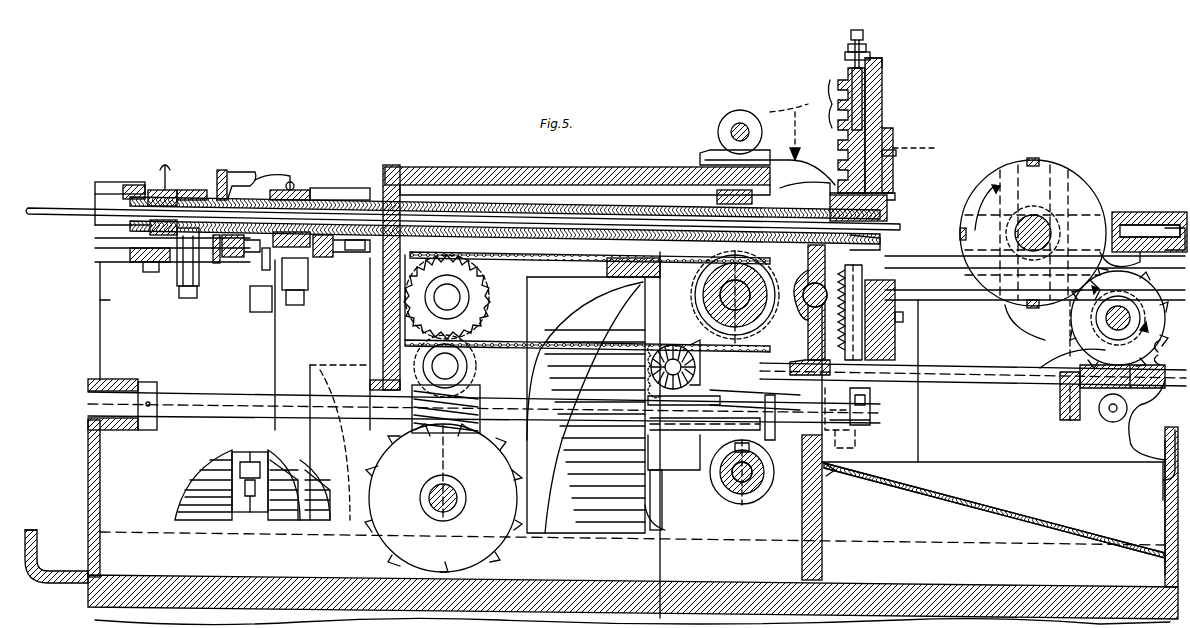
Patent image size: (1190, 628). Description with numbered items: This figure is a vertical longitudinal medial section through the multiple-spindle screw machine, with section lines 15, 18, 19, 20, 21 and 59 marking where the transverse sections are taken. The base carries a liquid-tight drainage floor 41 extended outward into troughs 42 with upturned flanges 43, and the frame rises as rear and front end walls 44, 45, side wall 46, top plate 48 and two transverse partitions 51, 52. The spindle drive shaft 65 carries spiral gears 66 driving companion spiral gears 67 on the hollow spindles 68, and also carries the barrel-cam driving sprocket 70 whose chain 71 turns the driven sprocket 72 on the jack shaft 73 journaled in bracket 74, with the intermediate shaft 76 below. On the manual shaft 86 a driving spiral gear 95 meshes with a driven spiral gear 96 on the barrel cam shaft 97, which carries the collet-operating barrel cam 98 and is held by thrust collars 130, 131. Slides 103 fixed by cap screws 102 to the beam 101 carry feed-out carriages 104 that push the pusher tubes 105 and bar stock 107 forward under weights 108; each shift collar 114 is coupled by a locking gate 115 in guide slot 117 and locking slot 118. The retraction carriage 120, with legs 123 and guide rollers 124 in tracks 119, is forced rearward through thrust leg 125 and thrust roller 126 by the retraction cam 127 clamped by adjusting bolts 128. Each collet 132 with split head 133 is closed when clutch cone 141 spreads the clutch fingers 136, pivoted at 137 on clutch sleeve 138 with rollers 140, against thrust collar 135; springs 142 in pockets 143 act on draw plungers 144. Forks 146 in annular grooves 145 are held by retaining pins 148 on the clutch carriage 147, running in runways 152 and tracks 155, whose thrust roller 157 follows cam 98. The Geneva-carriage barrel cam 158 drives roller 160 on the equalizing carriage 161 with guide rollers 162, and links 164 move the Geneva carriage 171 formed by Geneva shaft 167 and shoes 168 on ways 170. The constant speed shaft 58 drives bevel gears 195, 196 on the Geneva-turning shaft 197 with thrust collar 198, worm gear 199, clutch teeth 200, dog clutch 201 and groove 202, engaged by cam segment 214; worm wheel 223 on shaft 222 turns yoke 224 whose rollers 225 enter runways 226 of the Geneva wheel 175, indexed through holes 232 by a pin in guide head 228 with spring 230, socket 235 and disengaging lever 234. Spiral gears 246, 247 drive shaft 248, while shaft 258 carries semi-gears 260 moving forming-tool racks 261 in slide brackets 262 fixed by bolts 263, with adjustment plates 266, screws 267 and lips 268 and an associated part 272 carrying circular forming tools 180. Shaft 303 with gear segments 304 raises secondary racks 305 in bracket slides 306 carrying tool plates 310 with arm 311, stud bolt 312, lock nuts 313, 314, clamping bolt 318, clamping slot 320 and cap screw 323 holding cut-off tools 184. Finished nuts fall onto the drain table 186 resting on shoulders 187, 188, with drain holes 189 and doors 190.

The section line 15— 15 is at (922, 470).
The section line 18— 18 is at (325, 345).
The section line 19— 19 is at (152, 320).
The section line 20— 20 is at (740, 230).
The section line 21— 21 is at (451, 615).
The drainage floor 41 is at (948, 587).
The extension troughs 42 is at (60, 572).
The upturned flanges 43 is at (40, 532).
The rear end wall 44 is at (88, 477).
The front end wall 45 is at (1165, 578).
The side wall 46 is at (632, 349).
The top plate 48 is at (548, 167).
The vertical transverse partition 51 is at (383, 290).
The vertical transverse partition 52 is at (822, 524).
The constant speed shaft 58 is at (650, 368).
The center line 59 is at (660, 568).
The spindle drive shaft 65 is at (805, 305).
The spiral gears 66 is at (692, 292).
The companion spiral gears 67 is at (715, 198).
The spindles 68 is at (565, 205).
The barrel-cam driving sprocket 70 is at (700, 285).
The drum-driving chain 71 is at (475, 312).
The driven sprocket 72 is at (478, 268).
The jack shaft 73 is at (470, 290).
The bracket 74 is at (465, 300).
The intermediate shaft 76 is at (472, 367).
The manually operable shaft 86 is at (430, 505).
The driving spiral gear 95 is at (375, 545).
The driven spiral gear 96 is at (448, 430).
The barrel cam shaft 97 is at (185, 392).
The collet-operating barrel cam 98 is at (275, 360).
The slide-supporting beam 101 is at (130, 255).
The cap screws 102 is at (145, 262).
The carriage slides 103 is at (150, 232).
The feed-out carriage 104 is at (180, 192).
The pusher tube 105 is at (530, 205).
The bar stock 107 is at (38, 210).
The weight 108 is at (252, 310).
The shift collar 114 is at (148, 195).
The locking gate 115 is at (163, 190).
The transverse guide slot 117 is at (170, 195).
The locking slot 118 is at (155, 192).
The guide tracks 119 is at (95, 193).
The retraction carriage 120 is at (222, 170).
The legs 123 is at (140, 192).
The guide rollers 124 is at (95, 197).
The thrust leg 125 is at (177, 290).
The thrust roller 126 is at (180, 300).
The retraction cam 127 is at (205, 512).
The adjusting bolts 128 is at (248, 452).
The thrust collar 130 is at (153, 430).
The thrust collar 131 is at (760, 420).
The collet 132 is at (600, 225).
The conical split head 133 is at (878, 210).
The thrust collar 135 is at (225, 170).
The clutch fingers 136 is at (268, 172).
The pivot 137 is at (238, 180).
The clutch sleeve 138 is at (245, 188).
The anti-friction rollers 140 is at (282, 188).
The clutch cone 141 is at (300, 190).
The compression springs 142 is at (248, 265).
The pockets 143 is at (240, 270).
The draw plungers 144 is at (248, 258).
The annular grooves 145 is at (345, 185).
The fork 146 is at (296, 305).
The clutch carriage 147 is at (325, 258).
The retaining pin 148 is at (330, 252).
The runways 152 is at (273, 263).
The guide tracks 155 is at (376, 200).
The thrust roller 157 is at (288, 302).
The Geneva-carriage barrel cam 158 is at (548, 535).
The anti-friction roller 160 is at (625, 292).
The equalizing carriage 161 is at (607, 266).
The guide rollers 162 is at (560, 230).
The links 164 is at (940, 262).
The Geneva shaft 167 is at (1050, 225).
The supporting shoes 168 is at (985, 285).
The carriage ways 170 is at (960, 290).
The Geneva carriage 171 is at (1040, 315).
The Geneva wheel 175 is at (1065, 185).
The circular forming tool 180 is at (880, 248).
The cut-off tool 184 is at (895, 193).
The drain table 186 is at (1018, 508).
The shoulder 187 is at (835, 470).
The shoulder 188 is at (1160, 556).
The drain holes 189 is at (1000, 505).
The doors 190 is at (1165, 492).
The driving bevel gear 195 is at (648, 378).
The driven bevel gear 196 is at (650, 392).
The secondary Geneva-turning shaft 197 is at (901, 381).
The thrust collar 198 is at (1090, 390).
The worm gear 199 is at (1095, 400).
The dog clutch teeth 200 is at (1160, 325).
The dog clutch 201 is at (1169, 342).
The annular groove 202 is at (1169, 356).
The cam segment 214 is at (655, 528).
The tertiary Geneva-turning shaft 222 is at (1108, 325).
The worm wheel 223 is at (1105, 305).
The Geneva-turning yoke 224 is at (1148, 212).
The anti-friction rollers 225 is at (1110, 415).
The runways 226 is at (1060, 236).
The guide head 228 is at (1165, 212).
The compression spring 230 is at (1175, 212).
The index holes 232 is at (1035, 158).
The disengaging lever 234 is at (1135, 262).
The socket 235 is at (1140, 212).
The driving spiral gear 246 is at (770, 470).
The driven spiral gear 247 is at (765, 500).
The transverse shaft 248 is at (660, 510).
The transverse shaft 258 is at (800, 335).
The semi-spur gears 260 is at (862, 340).
The forming-tool rack 261 is at (866, 352).
The slide bracket 262 is at (868, 428).
The bolts 263 is at (868, 441).
The forming-tool adjustment plate 266 is at (895, 330).
The adjustment screw 267 is at (872, 408).
The lip 268 is at (890, 393).
The slide 272 is at (895, 316).
The transverse shaft 303 is at (720, 112).
The gear segments 304 is at (838, 85).
The secondary racks 305 is at (848, 70).
The bracket slides 306 is at (767, 167).
The cut-off tool plate 310 is at (882, 90).
The arm 311 is at (874, 58).
The adjustment stud bolt 312 is at (856, 30).
The upper lock nut 313 is at (850, 48).
The lower lock nut 314 is at (848, 58).
The clamping bolt 318 is at (893, 170).
The clamping slot 320 is at (893, 141).
The clamping cap screw 323 is at (898, 155).